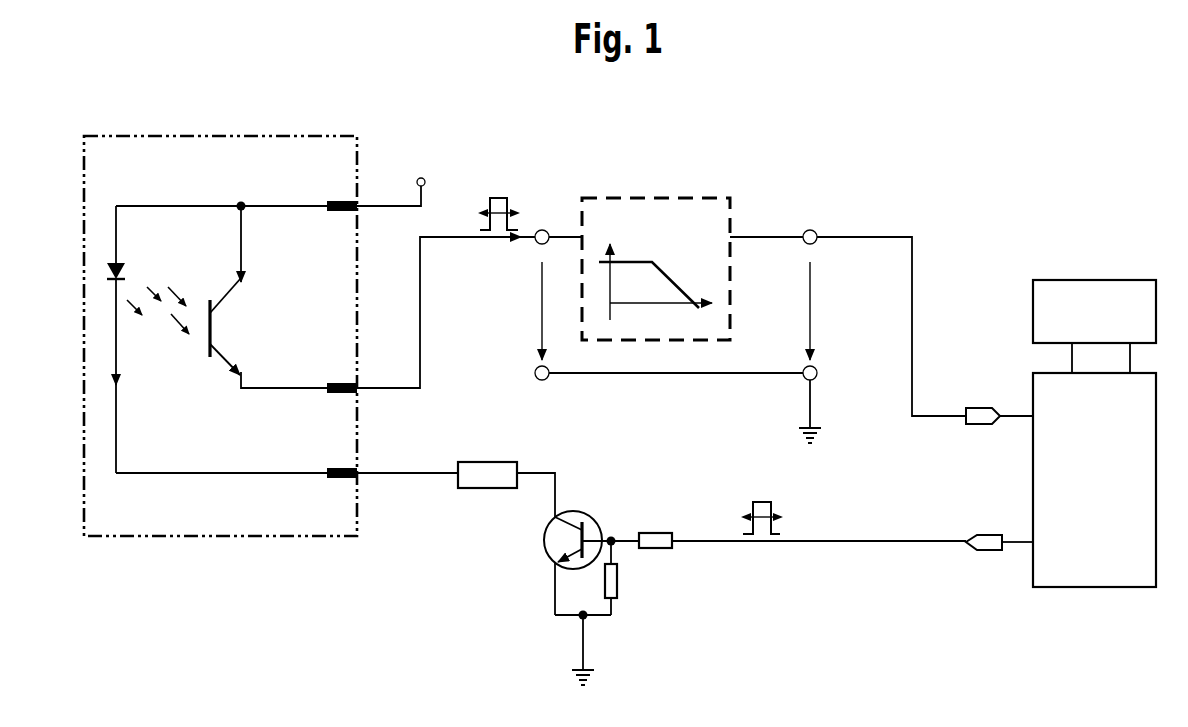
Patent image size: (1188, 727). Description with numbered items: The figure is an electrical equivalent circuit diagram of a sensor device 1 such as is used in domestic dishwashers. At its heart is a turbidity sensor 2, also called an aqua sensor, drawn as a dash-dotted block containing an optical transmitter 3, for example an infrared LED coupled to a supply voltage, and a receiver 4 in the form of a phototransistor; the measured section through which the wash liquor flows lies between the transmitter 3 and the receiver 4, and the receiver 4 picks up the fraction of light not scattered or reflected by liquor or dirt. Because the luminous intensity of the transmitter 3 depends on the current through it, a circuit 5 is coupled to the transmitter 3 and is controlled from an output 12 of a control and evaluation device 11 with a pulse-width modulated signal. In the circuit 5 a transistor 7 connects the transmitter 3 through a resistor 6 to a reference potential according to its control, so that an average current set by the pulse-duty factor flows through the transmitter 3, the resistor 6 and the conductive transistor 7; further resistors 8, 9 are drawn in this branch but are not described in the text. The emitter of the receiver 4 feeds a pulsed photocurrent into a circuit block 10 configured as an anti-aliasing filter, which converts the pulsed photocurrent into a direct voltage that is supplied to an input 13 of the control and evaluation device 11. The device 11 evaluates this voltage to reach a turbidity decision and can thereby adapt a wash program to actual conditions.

The sensor device 1 is at (826, 130).
The turbidity sensor 2 is at (272, 136).
The optical transmitter 3 is at (127, 272).
The receiver 4 is at (213, 318).
The circuit 5 is at (528, 606).
The resistor 6 is at (490, 481).
The transistor 7 is at (583, 512).
The resistor 8 is at (617, 582).
The resistor 9 is at (665, 548).
The circuit block 10 is at (655, 198).
The control and evaluation device 11 is at (1088, 571).
The output 12 is at (1033, 544).
The input 13 is at (1033, 420).